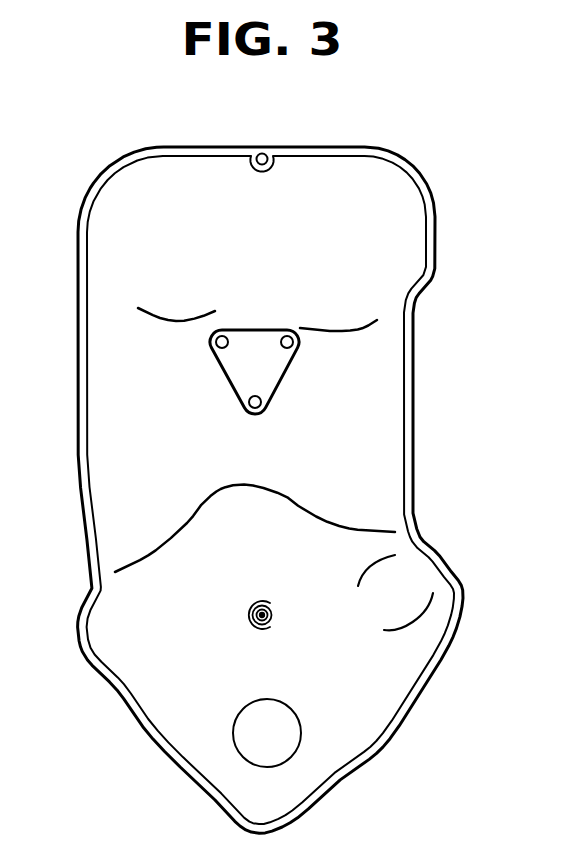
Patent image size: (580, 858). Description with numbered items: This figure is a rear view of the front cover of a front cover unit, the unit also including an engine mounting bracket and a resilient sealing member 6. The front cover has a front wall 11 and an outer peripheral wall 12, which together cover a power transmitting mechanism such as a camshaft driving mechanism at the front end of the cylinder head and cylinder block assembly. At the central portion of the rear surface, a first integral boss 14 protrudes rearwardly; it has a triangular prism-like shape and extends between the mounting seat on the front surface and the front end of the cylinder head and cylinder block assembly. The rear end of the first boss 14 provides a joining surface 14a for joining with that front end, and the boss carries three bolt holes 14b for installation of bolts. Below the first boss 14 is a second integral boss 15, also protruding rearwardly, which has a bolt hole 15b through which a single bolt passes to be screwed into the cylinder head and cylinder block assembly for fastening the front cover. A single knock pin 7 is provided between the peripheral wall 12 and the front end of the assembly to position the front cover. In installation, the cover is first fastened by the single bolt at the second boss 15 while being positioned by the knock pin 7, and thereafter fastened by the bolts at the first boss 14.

The resilient sealing member 6 is at (400, 170).
The knock pin 7 is at (272, 152).
The front wall 11 is at (380, 227).
The outer peripheral wall 12 is at (437, 247).
The first integral boss 14 is at (365, 386).
The joining surface 14a is at (376, 372).
The bolt holes 14b is at (408, 330).
The second integral boss 15 is at (385, 619).
The bolt hole 15b is at (402, 633).